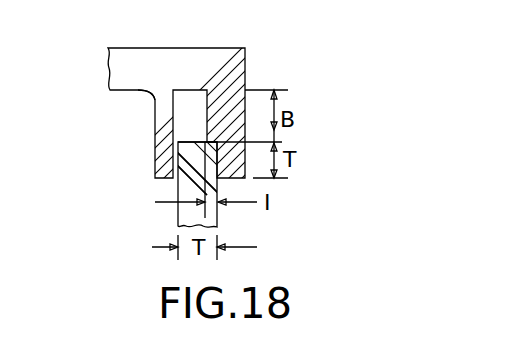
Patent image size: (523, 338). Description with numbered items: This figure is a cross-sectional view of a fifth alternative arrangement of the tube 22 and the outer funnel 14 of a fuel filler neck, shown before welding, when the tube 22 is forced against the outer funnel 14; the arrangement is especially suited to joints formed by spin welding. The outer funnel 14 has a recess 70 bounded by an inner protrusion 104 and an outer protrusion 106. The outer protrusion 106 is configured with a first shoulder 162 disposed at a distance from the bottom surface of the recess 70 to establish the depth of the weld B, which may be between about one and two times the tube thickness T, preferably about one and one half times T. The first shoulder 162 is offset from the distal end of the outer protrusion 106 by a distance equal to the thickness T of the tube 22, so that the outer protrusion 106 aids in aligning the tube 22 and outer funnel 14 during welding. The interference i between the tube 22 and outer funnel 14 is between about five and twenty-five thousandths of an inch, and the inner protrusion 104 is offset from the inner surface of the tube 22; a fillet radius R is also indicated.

The outer funnel 14 is at (108, 80).
The recess 70 is at (192, 94).
The fillet radius R is at (150, 96).
The inner protrusion 104 is at (155, 147).
The outer protrusion 106 is at (238, 118).
The first shoulder 162 is at (220, 122).
The tube 22 is at (177, 214).